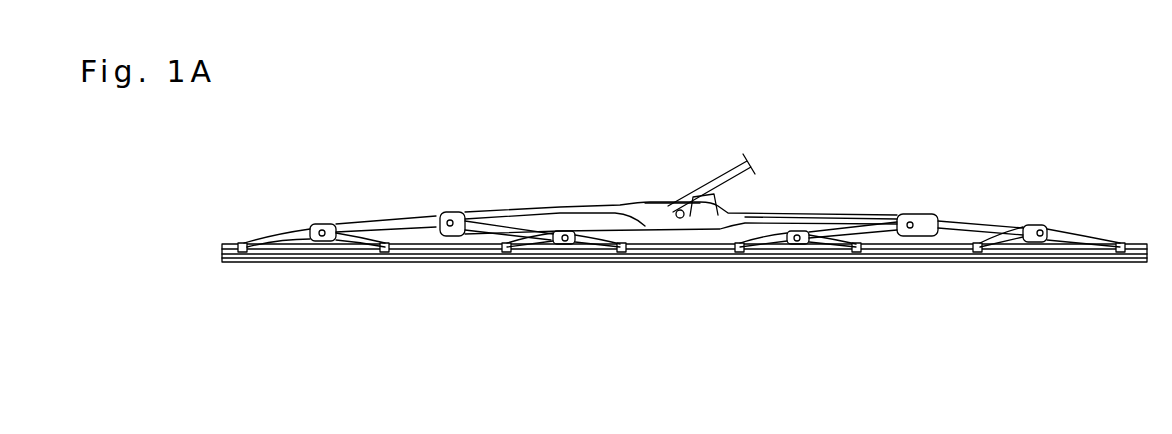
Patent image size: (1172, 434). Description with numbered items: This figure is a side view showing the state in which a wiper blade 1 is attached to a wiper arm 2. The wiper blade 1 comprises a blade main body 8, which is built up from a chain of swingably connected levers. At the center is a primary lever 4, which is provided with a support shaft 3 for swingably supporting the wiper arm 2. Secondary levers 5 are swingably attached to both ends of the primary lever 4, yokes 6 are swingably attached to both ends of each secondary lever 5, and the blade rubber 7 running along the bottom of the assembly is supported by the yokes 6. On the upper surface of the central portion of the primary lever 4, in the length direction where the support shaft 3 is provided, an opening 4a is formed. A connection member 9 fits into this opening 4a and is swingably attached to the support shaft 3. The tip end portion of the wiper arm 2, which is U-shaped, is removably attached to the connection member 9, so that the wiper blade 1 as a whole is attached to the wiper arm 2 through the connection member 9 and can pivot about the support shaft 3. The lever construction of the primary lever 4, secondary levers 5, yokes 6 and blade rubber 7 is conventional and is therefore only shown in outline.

The wiper blade 1 is at (667, 287).
The wiper arm 2 is at (727, 175).
The support shaft 3 is at (682, 219).
The primary lever 4 is at (790, 210).
The opening 4a is at (655, 205).
The secondary lever 5 is at (970, 225).
The yoke 6 is at (1077, 237).
The blade rubber 7 is at (1007, 260).
The blade main body 8 is at (880, 270).
The connection member 9 is at (708, 214).